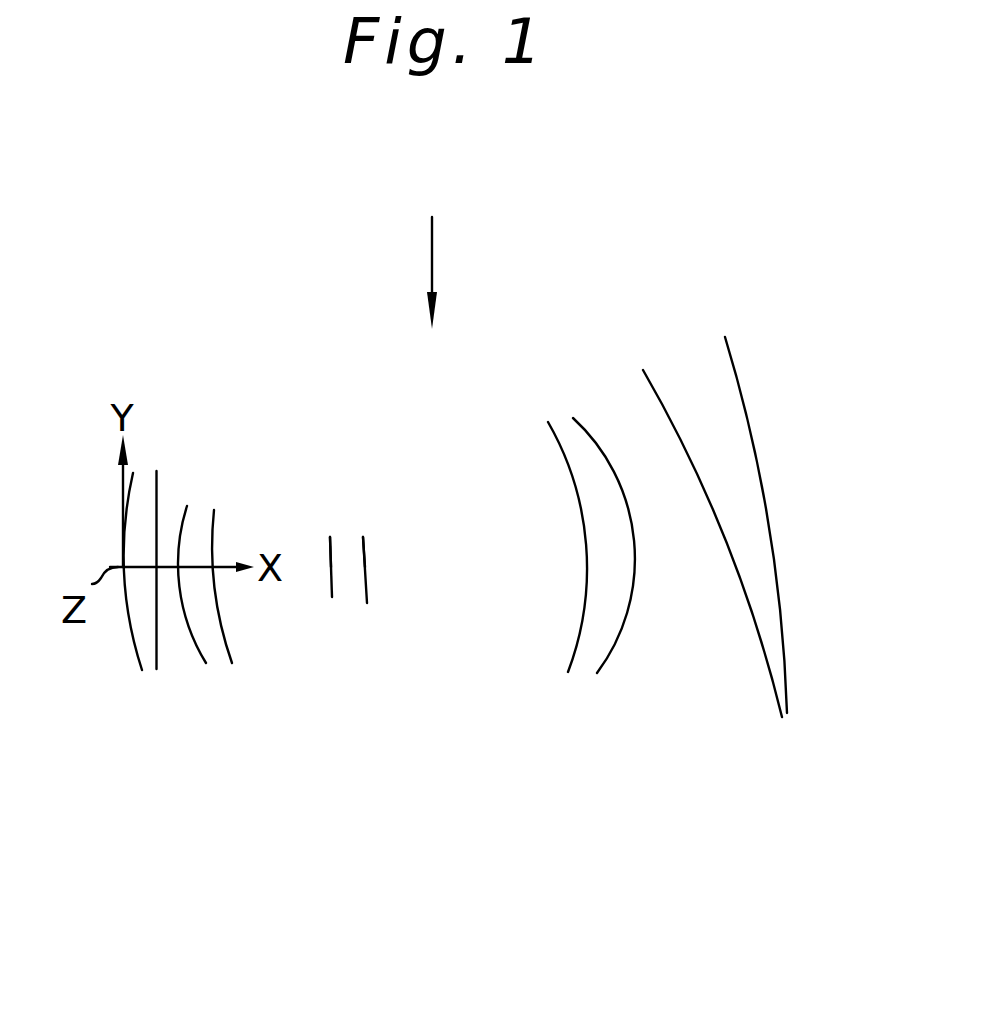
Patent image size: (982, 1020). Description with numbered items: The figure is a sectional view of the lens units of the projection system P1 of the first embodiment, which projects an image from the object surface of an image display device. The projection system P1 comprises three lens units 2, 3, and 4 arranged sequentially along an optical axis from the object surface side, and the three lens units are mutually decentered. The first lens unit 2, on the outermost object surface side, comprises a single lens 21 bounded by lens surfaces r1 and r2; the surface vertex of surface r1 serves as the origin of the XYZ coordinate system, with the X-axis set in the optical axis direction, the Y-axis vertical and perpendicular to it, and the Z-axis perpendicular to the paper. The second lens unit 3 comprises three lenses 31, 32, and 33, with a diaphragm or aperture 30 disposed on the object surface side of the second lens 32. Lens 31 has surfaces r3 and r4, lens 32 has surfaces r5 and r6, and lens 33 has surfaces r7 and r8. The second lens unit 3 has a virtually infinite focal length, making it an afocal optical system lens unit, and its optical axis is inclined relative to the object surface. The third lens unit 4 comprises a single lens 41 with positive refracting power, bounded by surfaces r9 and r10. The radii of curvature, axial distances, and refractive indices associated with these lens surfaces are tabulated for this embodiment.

The projection system P1 is at (428, 249).
The first lens unit 2 is at (159, 646).
The lens 21 is at (160, 563).
The lens surface r1 is at (133, 473).
The lens surface r2 is at (157, 503).
The second lens unit 3 is at (406, 589).
The lens 31 is at (230, 559).
The lens surface r3 is at (187, 508).
The lens surface r4 is at (216, 530).
The diaphragm 30 is at (333, 597).
The lens surface r5 is at (330, 548).
The lens 32 is at (347, 600).
The lens surface r6 is at (367, 548).
The lens 33 is at (549, 540).
The lens surface r7 is at (550, 450).
The lens surface r8 is at (585, 435).
The third lens unit 4 is at (696, 578).
The lens 41 is at (696, 499).
The lens surface r9 is at (648, 393).
The lens surface r10 is at (733, 356).